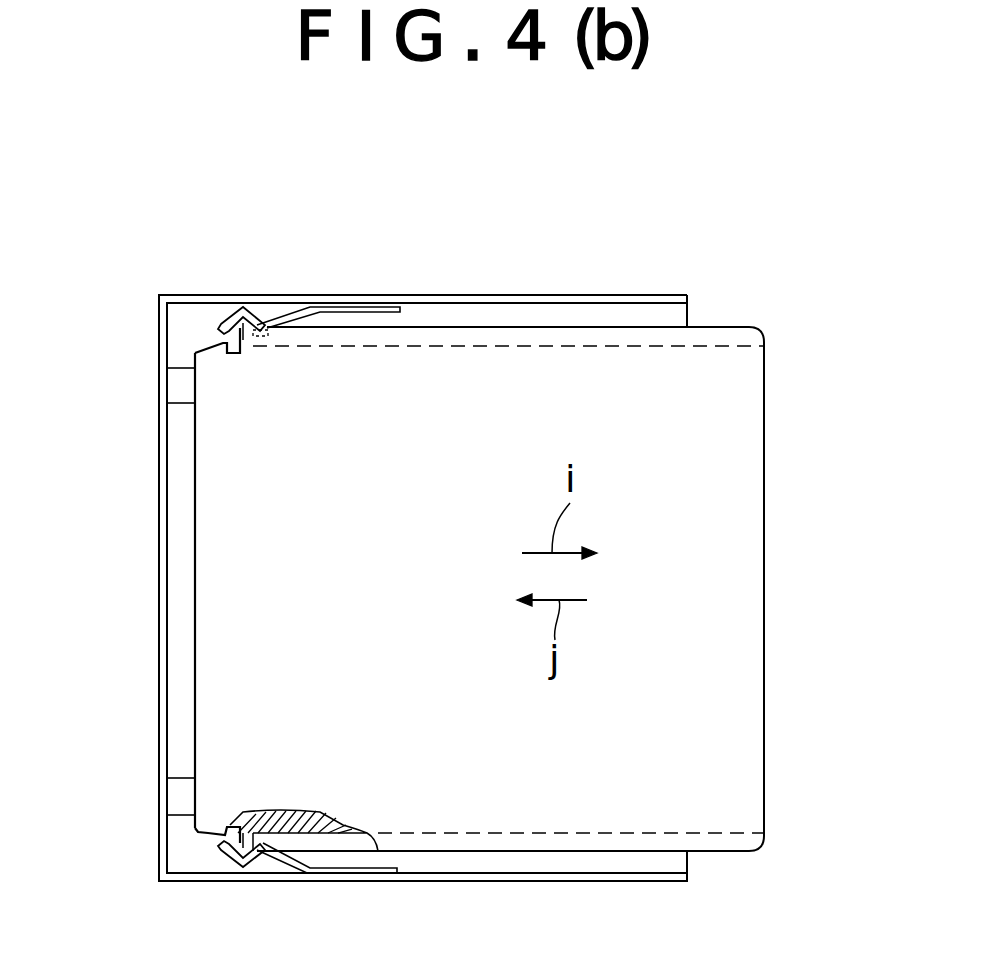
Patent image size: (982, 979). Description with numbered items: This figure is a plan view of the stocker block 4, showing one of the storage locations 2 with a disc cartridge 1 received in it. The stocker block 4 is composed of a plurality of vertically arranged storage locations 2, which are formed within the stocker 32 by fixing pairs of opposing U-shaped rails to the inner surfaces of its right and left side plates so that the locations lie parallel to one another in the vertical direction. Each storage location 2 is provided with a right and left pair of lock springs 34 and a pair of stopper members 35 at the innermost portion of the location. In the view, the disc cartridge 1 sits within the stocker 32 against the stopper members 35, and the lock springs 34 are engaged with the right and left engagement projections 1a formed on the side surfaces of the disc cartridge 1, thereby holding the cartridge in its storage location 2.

The disc cartridge 1 is at (730, 544).
The engagement projections 1a is at (255, 318).
The storage locations 2 is at (572, 306).
The stocker block 4 is at (148, 842).
The stocker 32 is at (482, 296).
The lock springs 34 is at (233, 322).
The stopper members 35 is at (178, 385).